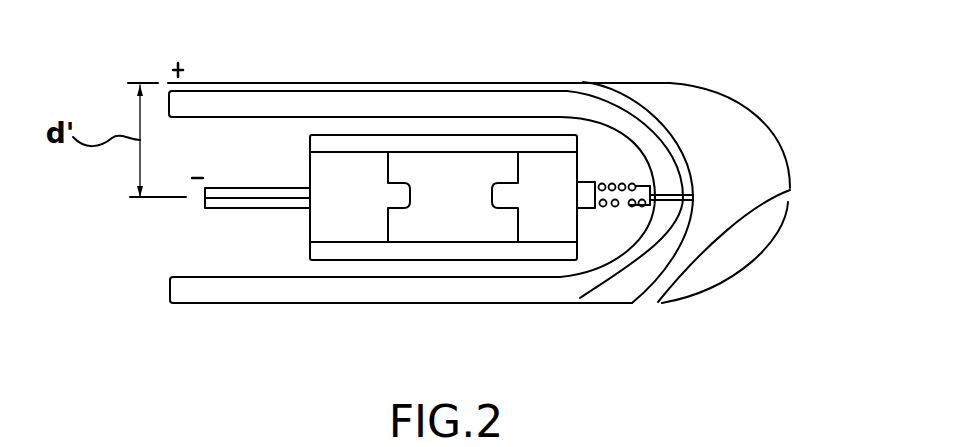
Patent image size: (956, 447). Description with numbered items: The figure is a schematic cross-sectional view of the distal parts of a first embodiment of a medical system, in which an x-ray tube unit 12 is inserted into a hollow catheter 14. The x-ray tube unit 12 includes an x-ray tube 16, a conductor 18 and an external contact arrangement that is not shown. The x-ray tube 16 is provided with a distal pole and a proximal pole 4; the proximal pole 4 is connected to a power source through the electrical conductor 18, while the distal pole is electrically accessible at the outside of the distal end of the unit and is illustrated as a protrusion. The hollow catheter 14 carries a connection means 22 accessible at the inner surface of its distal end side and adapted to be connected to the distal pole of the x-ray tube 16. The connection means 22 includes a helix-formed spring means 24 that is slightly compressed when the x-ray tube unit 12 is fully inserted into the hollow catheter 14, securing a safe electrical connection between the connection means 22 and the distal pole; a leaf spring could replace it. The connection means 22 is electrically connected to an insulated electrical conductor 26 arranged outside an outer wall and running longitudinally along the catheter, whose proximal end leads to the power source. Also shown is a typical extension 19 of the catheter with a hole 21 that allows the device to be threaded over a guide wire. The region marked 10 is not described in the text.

The proximal pole 4 is at (331, 220).
The electrode gap 10 is at (421, 161).
The x-ray tube unit 12 is at (290, 180).
The hollow catheter 14 is at (258, 318).
The x-ray tube 16 is at (453, 227).
The electrical conductor 18 is at (240, 200).
The extension 19 is at (710, 133).
The hole 21 is at (790, 193).
The connection means 22 is at (648, 193).
The helix-formed spring means 24 is at (610, 207).
The insulated electrical conductor 26 is at (545, 82).